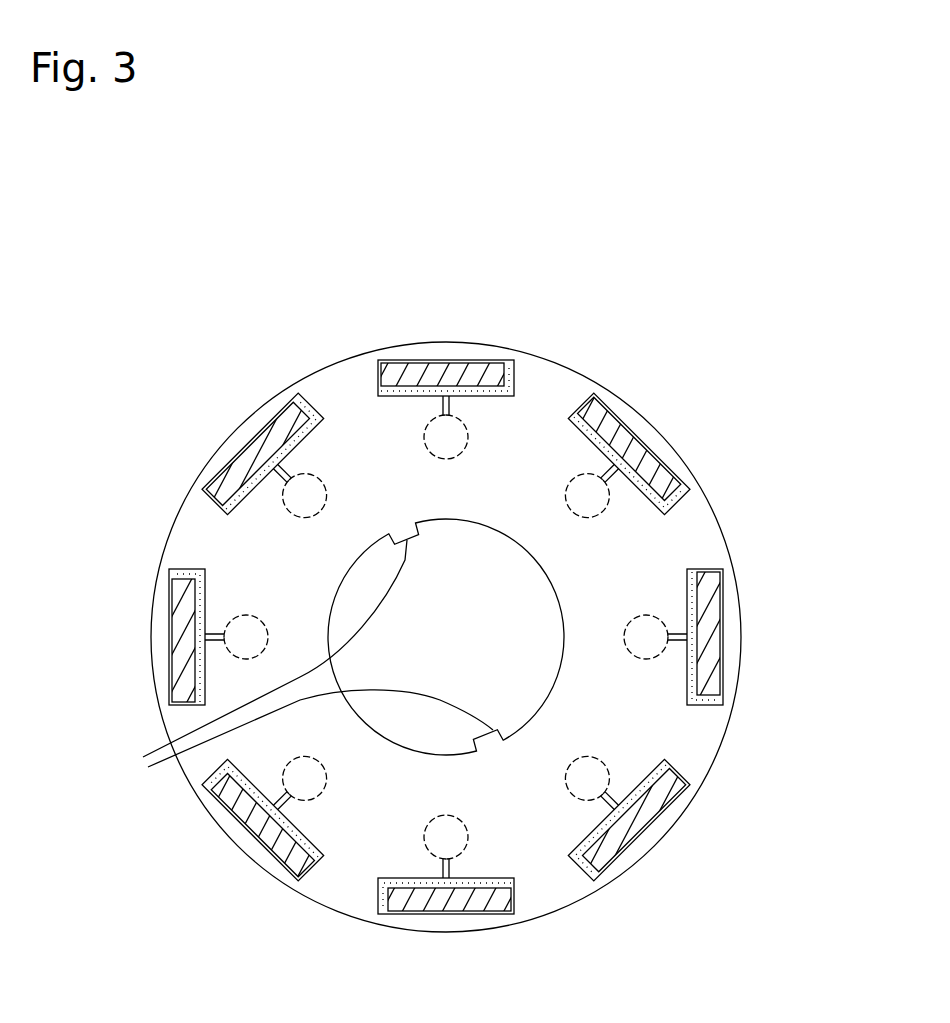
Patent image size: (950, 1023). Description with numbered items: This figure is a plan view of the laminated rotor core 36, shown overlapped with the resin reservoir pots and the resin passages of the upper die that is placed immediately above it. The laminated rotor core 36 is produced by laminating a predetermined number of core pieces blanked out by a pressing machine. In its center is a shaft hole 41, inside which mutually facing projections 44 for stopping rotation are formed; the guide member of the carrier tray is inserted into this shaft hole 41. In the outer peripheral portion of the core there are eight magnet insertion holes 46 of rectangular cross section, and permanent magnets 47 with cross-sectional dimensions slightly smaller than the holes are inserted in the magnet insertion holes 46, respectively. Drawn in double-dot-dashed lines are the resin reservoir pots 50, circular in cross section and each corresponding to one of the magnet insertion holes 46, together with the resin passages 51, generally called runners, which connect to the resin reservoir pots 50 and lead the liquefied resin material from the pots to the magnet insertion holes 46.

The laminated rotor core 36 is at (724, 750).
The shaft hole 41 is at (374, 733).
The projections for stopping rotation 44 is at (296, 666).
The magnet insertion holes 46 is at (647, 506).
The permanent magnets 47 is at (632, 450).
The resin reservoir pots 50 is at (468, 427).
The resin passages 51 is at (430, 416).